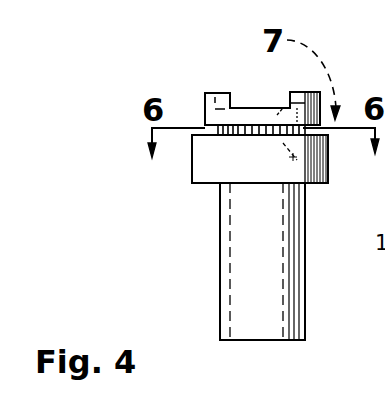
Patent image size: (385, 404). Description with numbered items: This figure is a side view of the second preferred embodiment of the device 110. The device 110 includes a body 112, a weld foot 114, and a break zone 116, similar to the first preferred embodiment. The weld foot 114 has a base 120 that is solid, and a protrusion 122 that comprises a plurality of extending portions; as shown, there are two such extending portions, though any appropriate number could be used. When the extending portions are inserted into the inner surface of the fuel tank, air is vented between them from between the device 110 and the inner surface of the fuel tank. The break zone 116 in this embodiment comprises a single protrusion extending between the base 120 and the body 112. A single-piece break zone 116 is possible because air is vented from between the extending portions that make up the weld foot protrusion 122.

The device 110 is at (172, 262).
The body 112 is at (272, 283).
The weld foot 114 is at (203, 85).
The break zone 116 is at (258, 131).
The base 120 is at (252, 116).
The protrusion 122 is at (208, 100).